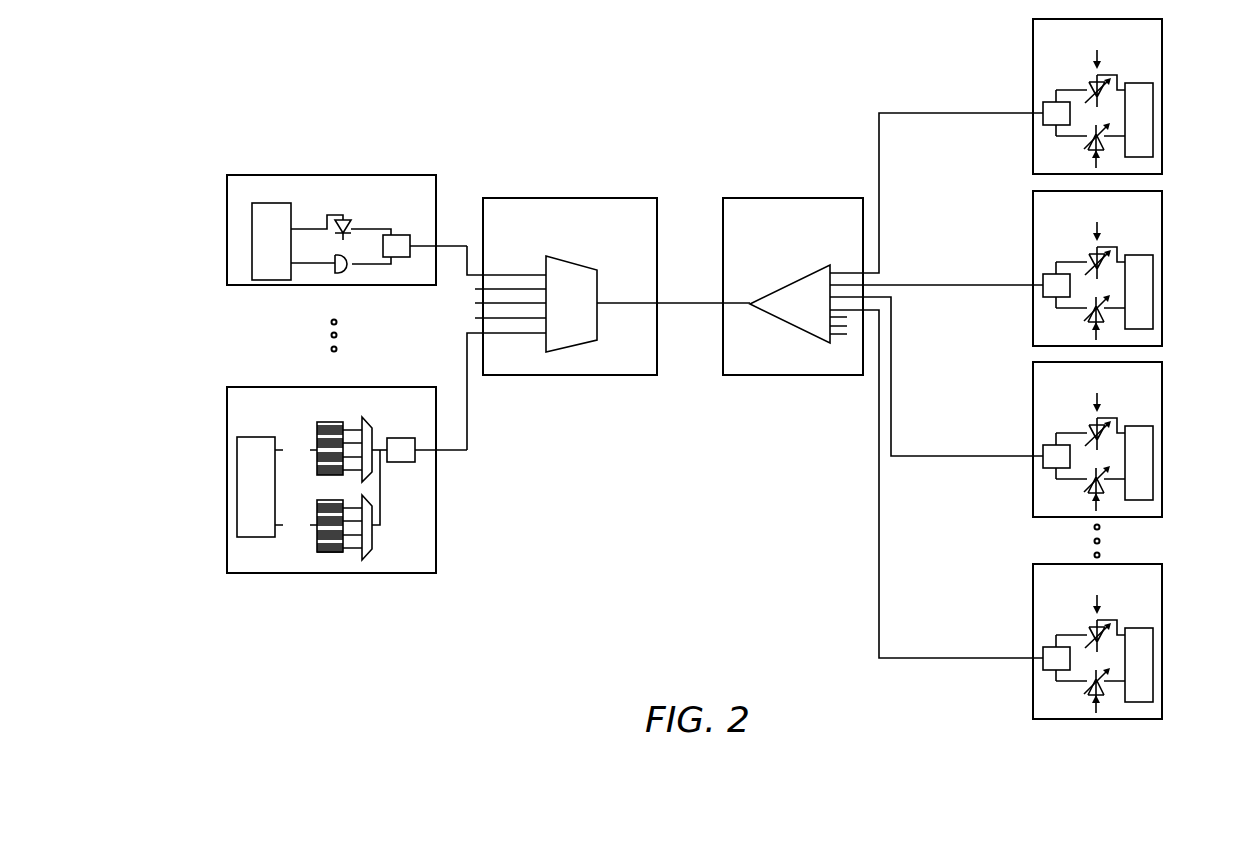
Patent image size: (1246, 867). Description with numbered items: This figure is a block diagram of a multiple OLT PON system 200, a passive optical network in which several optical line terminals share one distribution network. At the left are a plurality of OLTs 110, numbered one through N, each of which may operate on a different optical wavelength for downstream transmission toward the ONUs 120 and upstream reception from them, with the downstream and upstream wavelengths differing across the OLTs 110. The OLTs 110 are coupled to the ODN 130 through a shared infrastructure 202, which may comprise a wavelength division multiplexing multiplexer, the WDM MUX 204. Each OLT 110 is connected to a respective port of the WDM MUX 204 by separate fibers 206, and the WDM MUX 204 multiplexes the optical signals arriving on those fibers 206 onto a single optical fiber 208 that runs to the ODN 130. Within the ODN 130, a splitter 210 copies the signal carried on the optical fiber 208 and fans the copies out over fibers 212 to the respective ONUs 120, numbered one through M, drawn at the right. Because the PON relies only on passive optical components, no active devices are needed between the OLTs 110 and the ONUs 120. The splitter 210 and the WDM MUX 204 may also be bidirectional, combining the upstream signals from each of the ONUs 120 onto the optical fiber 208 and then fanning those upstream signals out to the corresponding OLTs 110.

The multiple OLT PON system 200 is at (224, 142).
The OLT 110 is at (330, 175).
The ONU 120 is at (1163, 103).
The ODN 130 is at (798, 198).
The shared infrastructure 202 is at (573, 198).
The WDM MUX 204 is at (573, 348).
The fibers 206 is at (468, 287).
The optical fiber 208 is at (692, 300).
The splitter 210 is at (788, 327).
The fibers 212 is at (850, 272).